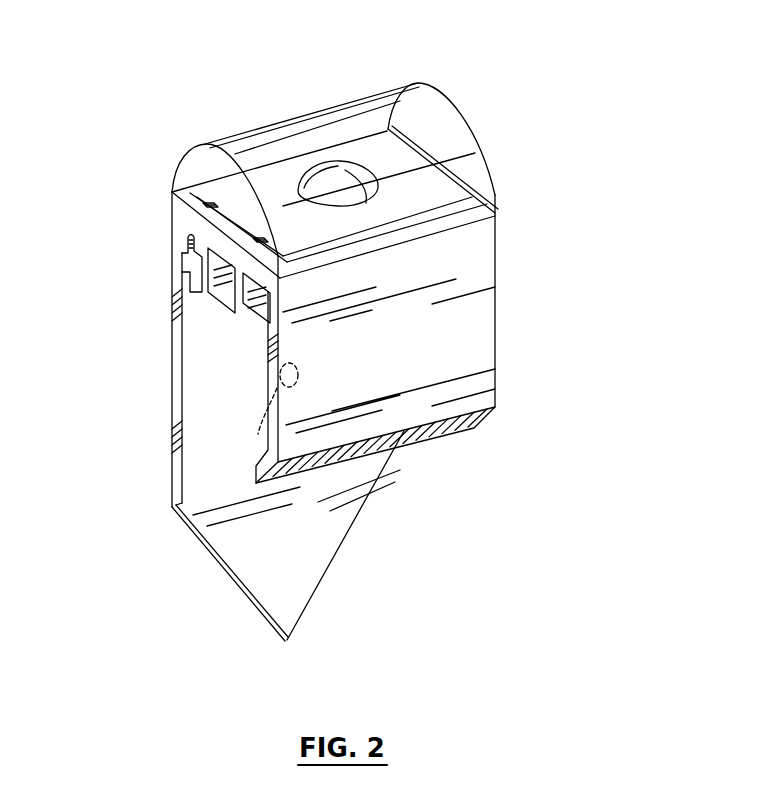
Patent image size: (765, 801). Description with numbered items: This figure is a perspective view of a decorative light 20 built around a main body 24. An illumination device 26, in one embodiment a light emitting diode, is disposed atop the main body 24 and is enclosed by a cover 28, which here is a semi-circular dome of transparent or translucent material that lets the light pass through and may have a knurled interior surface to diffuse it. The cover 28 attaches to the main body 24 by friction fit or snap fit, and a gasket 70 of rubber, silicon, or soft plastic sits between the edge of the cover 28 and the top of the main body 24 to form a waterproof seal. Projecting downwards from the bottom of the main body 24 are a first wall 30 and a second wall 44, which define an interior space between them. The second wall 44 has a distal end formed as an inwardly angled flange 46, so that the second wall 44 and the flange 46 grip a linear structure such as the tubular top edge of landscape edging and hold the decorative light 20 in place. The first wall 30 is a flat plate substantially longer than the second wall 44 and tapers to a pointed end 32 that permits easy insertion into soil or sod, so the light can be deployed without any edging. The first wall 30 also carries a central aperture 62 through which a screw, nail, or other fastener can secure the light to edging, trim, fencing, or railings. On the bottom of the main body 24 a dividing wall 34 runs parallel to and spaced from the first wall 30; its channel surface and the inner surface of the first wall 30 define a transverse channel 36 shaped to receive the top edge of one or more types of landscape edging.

The decorative light 20 is at (587, 116).
The main body 24 is at (147, 210).
The illumination device 26 is at (367, 159).
The cover 28 is at (452, 126).
The first wall 30 is at (198, 404).
The pointed end 32 is at (294, 646).
The dividing wall 34 is at (187, 276).
The transverse channel 36 is at (179, 284).
The second wall 44 is at (410, 357).
The inwardly angled flange 46 is at (426, 424).
The central aperture 62 is at (256, 435).
The gasket 70 is at (470, 228).